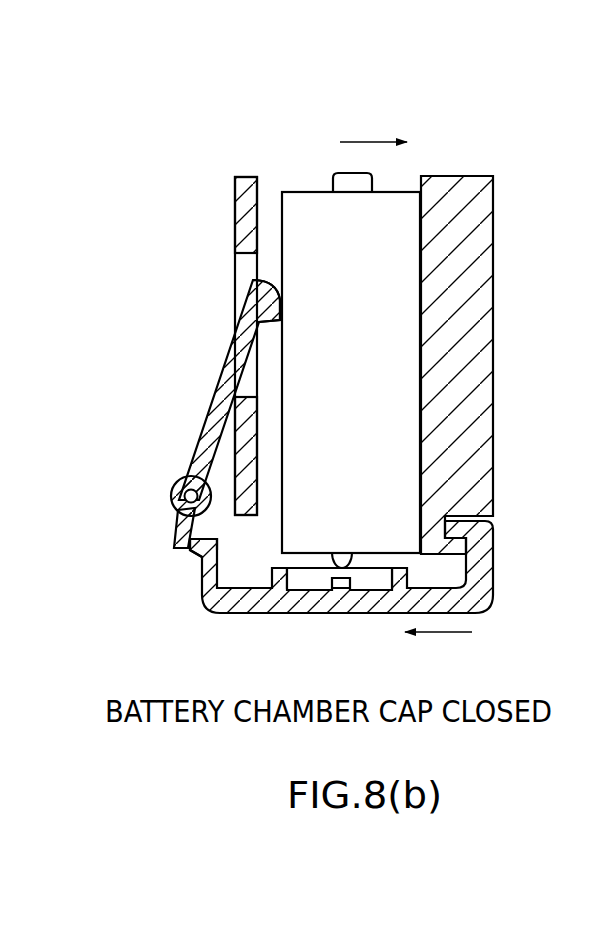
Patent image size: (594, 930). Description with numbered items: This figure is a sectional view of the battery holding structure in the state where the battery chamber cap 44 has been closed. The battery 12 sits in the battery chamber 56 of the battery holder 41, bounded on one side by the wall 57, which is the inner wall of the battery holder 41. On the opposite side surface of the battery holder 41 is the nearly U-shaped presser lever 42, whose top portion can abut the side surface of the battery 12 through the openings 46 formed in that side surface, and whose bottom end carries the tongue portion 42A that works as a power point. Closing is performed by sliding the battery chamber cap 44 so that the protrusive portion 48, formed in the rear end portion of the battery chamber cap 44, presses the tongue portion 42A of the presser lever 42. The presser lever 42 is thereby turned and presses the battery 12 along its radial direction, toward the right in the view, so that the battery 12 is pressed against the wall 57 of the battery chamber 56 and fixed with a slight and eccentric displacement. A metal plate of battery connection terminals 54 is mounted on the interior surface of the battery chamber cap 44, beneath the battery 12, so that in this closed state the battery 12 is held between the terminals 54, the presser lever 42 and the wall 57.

The battery 12 is at (312, 210).
The battery holder 41 is at (478, 276).
The presser lever 42 is at (220, 400).
The tongue portion 42A is at (172, 533).
The battery chamber cap 44 is at (485, 582).
The openings 46 is at (238, 298).
The protrusive portion 48 is at (196, 555).
The battery connection terminals 54 is at (339, 560).
The battery chamber 56 is at (270, 194).
The wall 57 is at (410, 182).